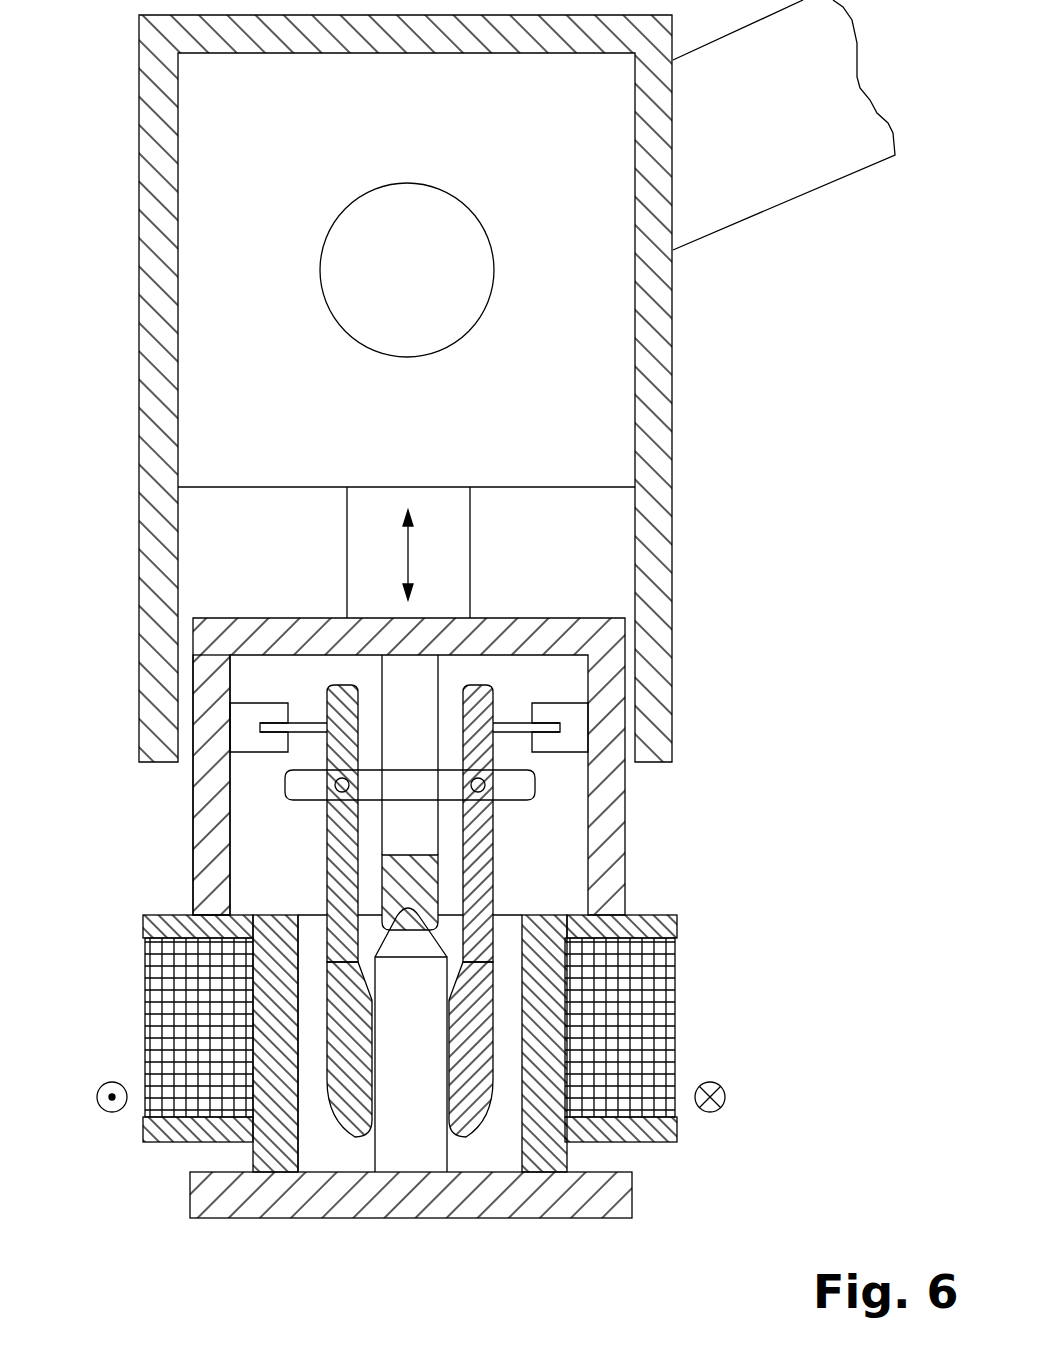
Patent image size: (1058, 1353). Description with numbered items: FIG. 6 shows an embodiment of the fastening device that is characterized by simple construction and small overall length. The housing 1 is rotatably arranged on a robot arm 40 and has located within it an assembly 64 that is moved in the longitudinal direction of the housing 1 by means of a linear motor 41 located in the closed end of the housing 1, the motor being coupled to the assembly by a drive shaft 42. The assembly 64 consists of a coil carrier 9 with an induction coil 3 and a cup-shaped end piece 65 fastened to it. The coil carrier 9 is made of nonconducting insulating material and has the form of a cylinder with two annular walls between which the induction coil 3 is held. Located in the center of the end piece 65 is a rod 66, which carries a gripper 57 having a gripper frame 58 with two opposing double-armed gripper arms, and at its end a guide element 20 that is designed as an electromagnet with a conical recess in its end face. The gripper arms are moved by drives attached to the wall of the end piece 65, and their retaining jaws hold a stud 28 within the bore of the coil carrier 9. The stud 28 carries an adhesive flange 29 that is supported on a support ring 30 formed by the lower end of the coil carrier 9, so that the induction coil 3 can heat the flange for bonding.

The housing 1 is at (155, 160).
The induction coil 3 is at (162, 1023).
The coil carrier 9 is at (143, 1128).
The guide element 20 is at (407, 890).
The stud 28 is at (405, 1158).
The adhesive flange 29 is at (613, 1198).
The support ring 30 is at (263, 1157).
The robot arm 40 is at (748, 202).
The linear motor 41 is at (195, 260).
The drive shaft 42 is at (357, 546).
The gripper 57 is at (515, 822).
The gripper frame 58 is at (297, 788).
The assembly 64 is at (583, 608).
The end piece 65 is at (210, 842).
The rod 66 is at (400, 680).